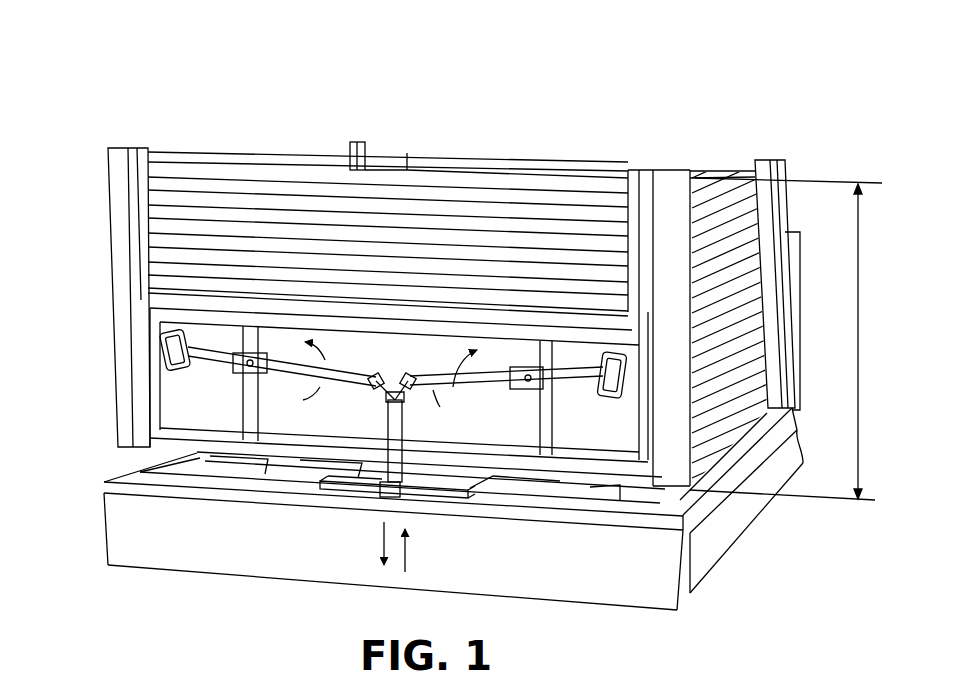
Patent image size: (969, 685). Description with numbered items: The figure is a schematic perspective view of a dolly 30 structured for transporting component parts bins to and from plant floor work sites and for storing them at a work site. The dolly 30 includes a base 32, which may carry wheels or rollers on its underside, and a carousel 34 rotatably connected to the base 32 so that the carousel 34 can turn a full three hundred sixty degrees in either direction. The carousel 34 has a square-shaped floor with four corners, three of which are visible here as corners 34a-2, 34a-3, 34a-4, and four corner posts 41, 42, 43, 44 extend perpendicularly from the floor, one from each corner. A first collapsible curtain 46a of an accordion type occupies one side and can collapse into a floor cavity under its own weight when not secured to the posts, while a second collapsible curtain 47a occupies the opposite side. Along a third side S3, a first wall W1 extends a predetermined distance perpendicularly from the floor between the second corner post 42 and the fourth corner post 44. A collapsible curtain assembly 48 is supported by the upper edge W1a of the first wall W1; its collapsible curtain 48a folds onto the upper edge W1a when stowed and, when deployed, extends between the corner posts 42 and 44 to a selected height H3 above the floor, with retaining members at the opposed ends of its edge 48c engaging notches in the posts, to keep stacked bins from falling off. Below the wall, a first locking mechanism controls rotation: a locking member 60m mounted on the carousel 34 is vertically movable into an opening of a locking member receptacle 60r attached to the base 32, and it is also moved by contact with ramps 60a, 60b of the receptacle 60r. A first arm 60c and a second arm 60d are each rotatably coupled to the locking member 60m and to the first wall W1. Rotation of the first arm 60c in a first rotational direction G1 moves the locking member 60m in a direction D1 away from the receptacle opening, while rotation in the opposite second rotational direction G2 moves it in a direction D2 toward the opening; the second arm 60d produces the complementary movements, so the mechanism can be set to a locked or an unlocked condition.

The dolly 30 is at (250, 108).
The base 32 is at (107, 513).
The carousel 34 is at (107, 217).
The corner 34a-2 is at (133, 433).
The corner 34a-3 is at (782, 392).
The corner 34a-4 is at (695, 467).
The corner post 41 is at (355, 142).
The second corner post 42 is at (123, 152).
The corner post 43 is at (770, 160).
The fourth corner post 44 is at (670, 170).
The collapsible curtain 46a is at (217, 148).
The collapsible curtain 47a is at (743, 262).
The collapsible curtain assembly 48 is at (195, 237).
The collapsible curtain 48a is at (195, 268).
The edge of the curtain 48c is at (408, 158).
The ramp 60a is at (435, 495).
The ramp 60b is at (333, 493).
The first arm 60c is at (215, 335).
The second arm 60d is at (566, 372).
The locking member 60m is at (392, 428).
The locking member receptacle 60r is at (375, 495).
The direction D1 is at (368, 543).
The direction D2 is at (423, 550).
The first rotational direction G1 is at (333, 353).
The second rotational direction G2 is at (448, 388).
The selected height H3 is at (796, 339).
The third side S3 is at (173, 400).
The first wall W1 is at (602, 430).
The upper edge of the first wall W1a is at (502, 310).